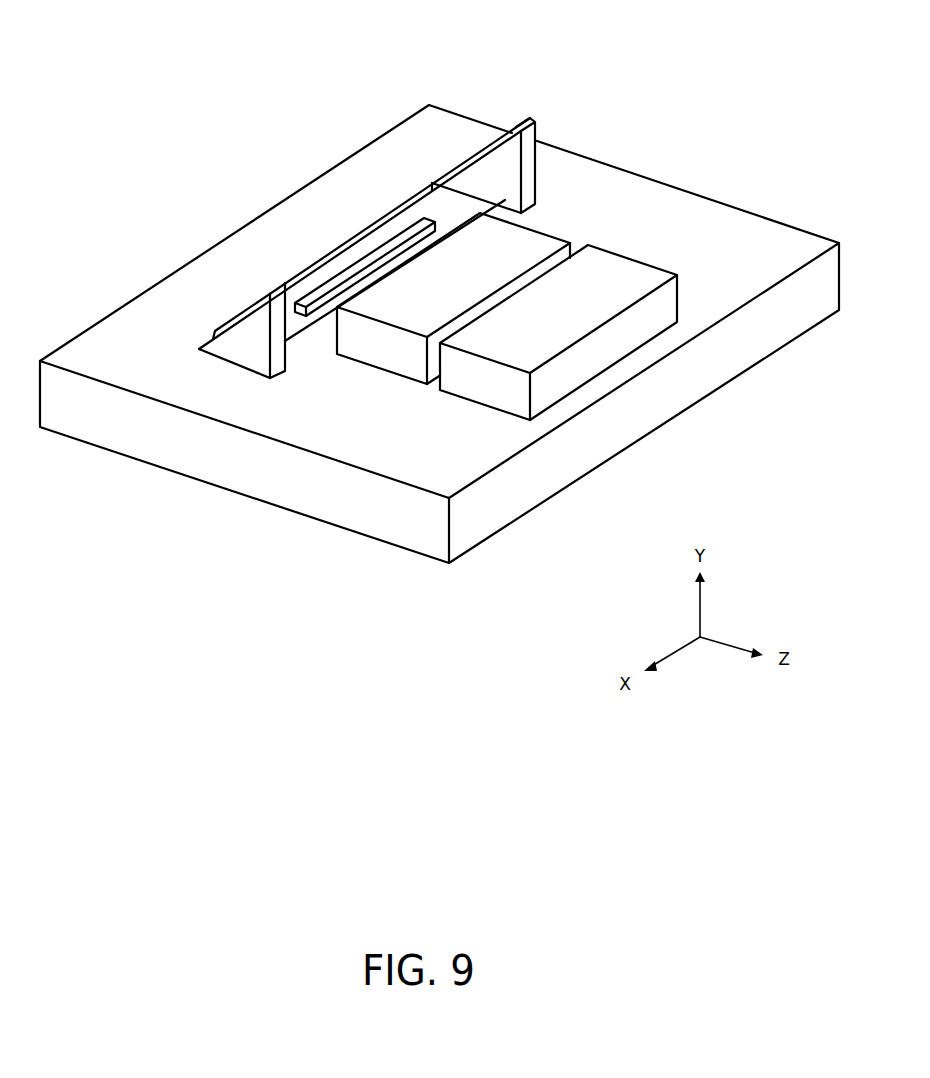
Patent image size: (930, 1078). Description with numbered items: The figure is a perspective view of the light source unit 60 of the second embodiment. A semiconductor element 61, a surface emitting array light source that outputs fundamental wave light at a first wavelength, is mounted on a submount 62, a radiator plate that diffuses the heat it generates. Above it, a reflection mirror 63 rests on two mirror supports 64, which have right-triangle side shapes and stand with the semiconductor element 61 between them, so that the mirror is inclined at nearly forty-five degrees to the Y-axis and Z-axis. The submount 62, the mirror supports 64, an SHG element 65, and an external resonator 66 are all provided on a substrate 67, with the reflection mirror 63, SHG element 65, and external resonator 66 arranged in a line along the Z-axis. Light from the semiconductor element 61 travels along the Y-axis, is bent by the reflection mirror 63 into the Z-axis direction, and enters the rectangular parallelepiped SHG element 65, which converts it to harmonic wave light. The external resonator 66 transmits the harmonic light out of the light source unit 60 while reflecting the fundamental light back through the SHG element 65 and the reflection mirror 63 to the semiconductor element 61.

The light source unit 60 is at (357, 73).
The semiconductor element 61 is at (326, 292).
The submount 62 is at (297, 340).
The reflection mirror 63 is at (245, 306).
The mirror support 64 is at (530, 154).
The SHG element 65 is at (525, 245).
The external resonator 66 is at (593, 273).
The substrate 67 is at (733, 235).